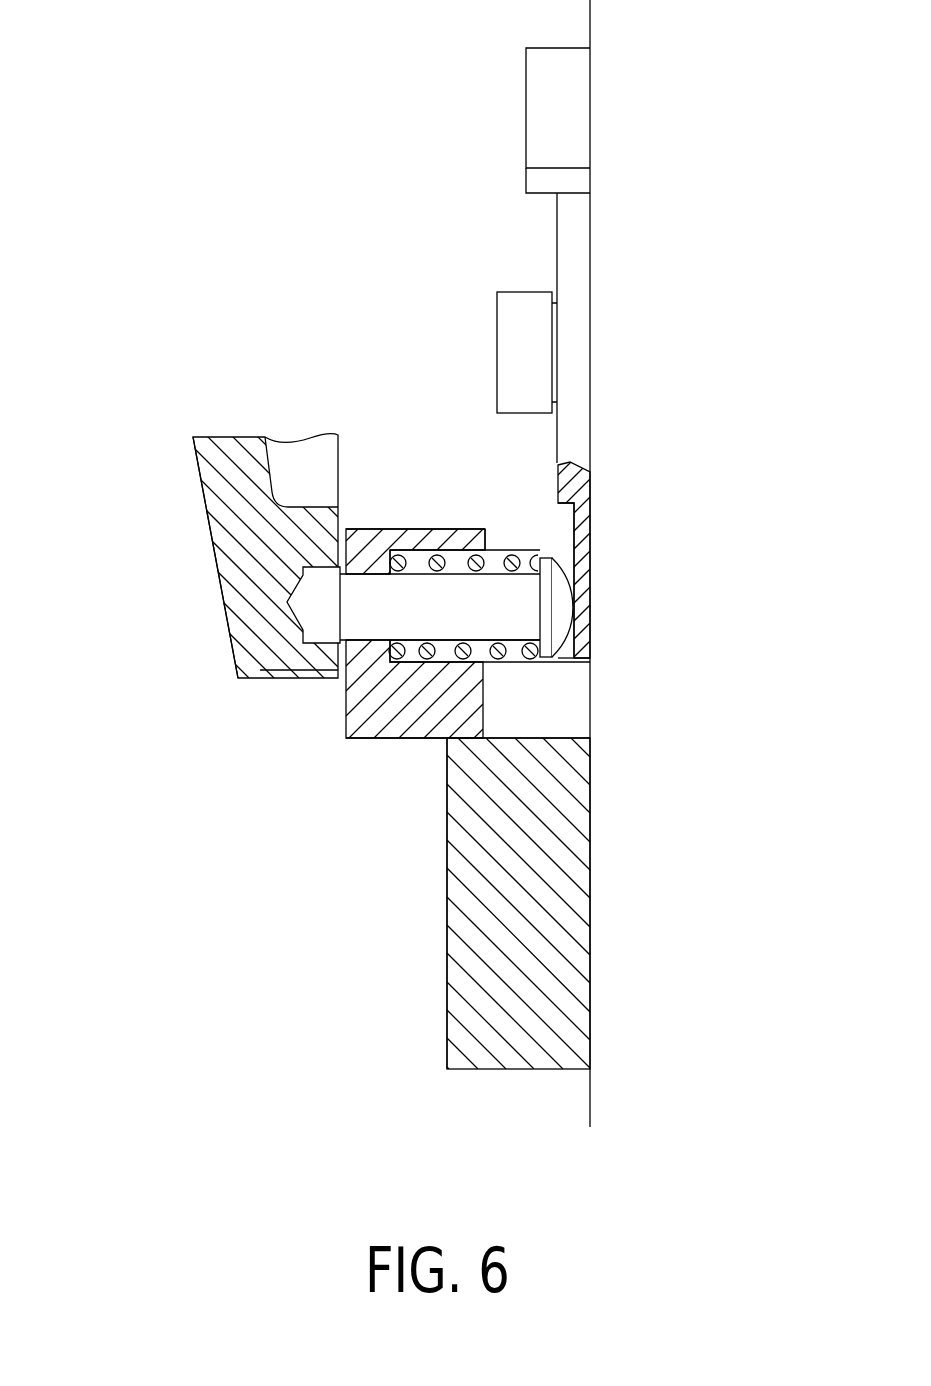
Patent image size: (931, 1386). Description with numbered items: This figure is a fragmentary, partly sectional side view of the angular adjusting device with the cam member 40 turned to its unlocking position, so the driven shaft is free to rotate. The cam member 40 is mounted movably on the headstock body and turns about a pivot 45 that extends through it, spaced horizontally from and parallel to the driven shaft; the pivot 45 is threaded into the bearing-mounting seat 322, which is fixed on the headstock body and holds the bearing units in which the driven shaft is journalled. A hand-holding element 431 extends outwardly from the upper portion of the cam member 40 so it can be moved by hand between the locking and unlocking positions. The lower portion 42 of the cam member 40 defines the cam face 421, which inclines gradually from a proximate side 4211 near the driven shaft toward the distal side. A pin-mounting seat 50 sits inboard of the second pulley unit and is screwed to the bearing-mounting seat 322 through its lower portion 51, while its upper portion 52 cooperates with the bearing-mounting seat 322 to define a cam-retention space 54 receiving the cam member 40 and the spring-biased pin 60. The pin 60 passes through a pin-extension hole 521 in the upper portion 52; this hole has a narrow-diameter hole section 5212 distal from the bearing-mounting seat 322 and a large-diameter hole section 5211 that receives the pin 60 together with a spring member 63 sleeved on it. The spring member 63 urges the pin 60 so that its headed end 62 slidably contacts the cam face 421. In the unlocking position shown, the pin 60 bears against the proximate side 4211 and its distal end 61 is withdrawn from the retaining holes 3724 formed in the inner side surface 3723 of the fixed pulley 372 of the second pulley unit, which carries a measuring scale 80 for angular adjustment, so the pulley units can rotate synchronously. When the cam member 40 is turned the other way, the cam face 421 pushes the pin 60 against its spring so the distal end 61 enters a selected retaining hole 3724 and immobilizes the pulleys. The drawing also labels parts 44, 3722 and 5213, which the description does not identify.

The cam member 40 is at (515, 66).
The hand-holding element 431 is at (538, 137).
The pivot 45 is at (503, 303).
The rod 44 is at (553, 308).
The cam-retention space 54 is at (508, 543).
The spring member 63 is at (486, 537).
The headed end 62 is at (568, 570).
The cam face 421 is at (572, 569).
The lower portion 42 is at (583, 594).
The proximate side 4211 is at (576, 645).
The fixed pulley 372 is at (205, 483).
The inclined face 3722 is at (215, 572).
The inner side surface 3723 is at (333, 533).
The retaining holes 3724 is at (317, 627).
The measuring scale 80 is at (258, 670).
The distal end 61 is at (360, 627).
The spring-biased pin 60 is at (412, 648).
The upper portion 52 is at (357, 727).
The pin-extension hole 521 is at (443, 663).
The large-diameter hole section 5211 is at (462, 537).
The narrow-diameter hole section 5212 is at (362, 537).
The block top 5213 is at (375, 540).
The lower portion 51 is at (447, 960).
The pin-mounting seat 50 is at (430, 1000).
The bearing-mounting seat 322 is at (597, 1088).